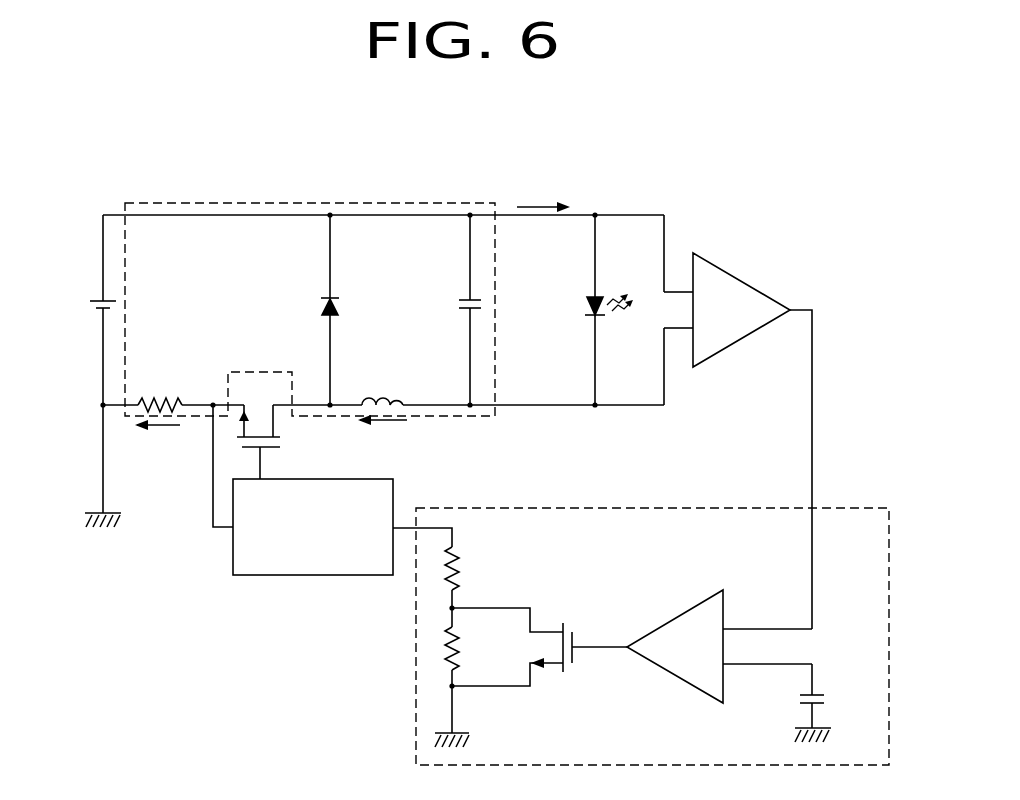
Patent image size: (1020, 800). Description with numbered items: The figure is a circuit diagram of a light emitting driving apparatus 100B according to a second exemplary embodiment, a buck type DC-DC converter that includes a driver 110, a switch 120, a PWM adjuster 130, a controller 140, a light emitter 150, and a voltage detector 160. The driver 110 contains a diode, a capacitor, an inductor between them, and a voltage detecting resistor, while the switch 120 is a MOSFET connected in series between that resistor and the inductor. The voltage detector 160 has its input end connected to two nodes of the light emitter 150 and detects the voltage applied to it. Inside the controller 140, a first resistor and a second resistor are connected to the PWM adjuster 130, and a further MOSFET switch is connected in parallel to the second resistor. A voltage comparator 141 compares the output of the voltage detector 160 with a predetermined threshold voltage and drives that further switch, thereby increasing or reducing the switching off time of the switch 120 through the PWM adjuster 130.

The light emitting driving apparatus 100B is at (450, 127).
The driver 110 is at (290, 201).
The switch 120 is at (285, 432).
The PWM adjuster 130 is at (312, 577).
The controller 140 is at (861, 506).
The voltage comparator 141 is at (672, 612).
The light emitter 150 is at (600, 300).
The voltage detector 160 is at (742, 278).